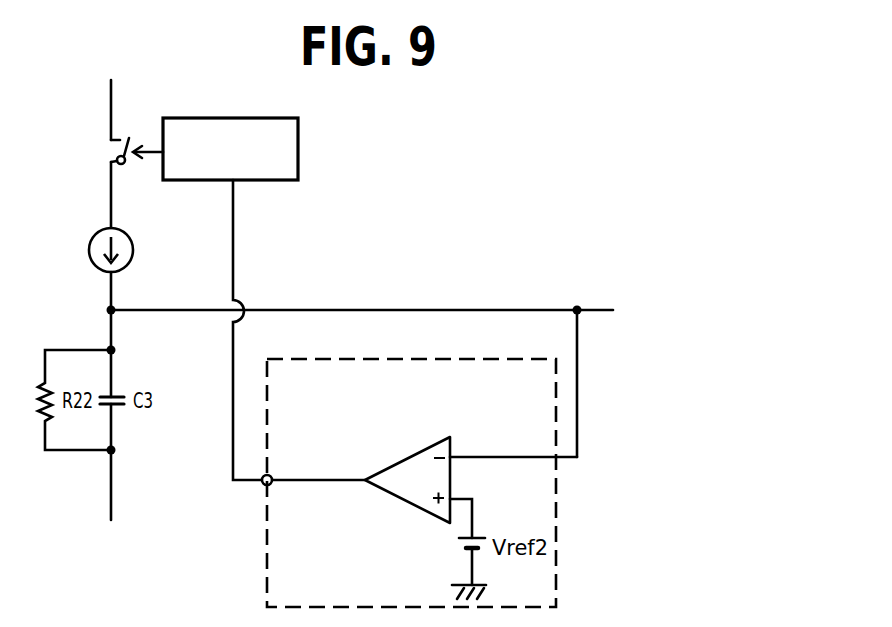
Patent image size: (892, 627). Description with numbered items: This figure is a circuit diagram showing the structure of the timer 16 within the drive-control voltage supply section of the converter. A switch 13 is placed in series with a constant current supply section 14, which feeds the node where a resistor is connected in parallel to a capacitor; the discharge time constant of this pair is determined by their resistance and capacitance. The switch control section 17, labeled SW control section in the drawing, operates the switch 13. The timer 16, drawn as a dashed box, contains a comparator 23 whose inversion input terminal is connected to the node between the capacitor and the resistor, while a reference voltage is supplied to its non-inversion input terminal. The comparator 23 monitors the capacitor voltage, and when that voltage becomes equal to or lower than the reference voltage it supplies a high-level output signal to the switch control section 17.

The switch 13 is at (127, 132).
The constant current supply section 14 is at (123, 230).
The timer 16 is at (470, 358).
The switch control section 17 is at (265, 118).
The comparator 23 is at (407, 457).